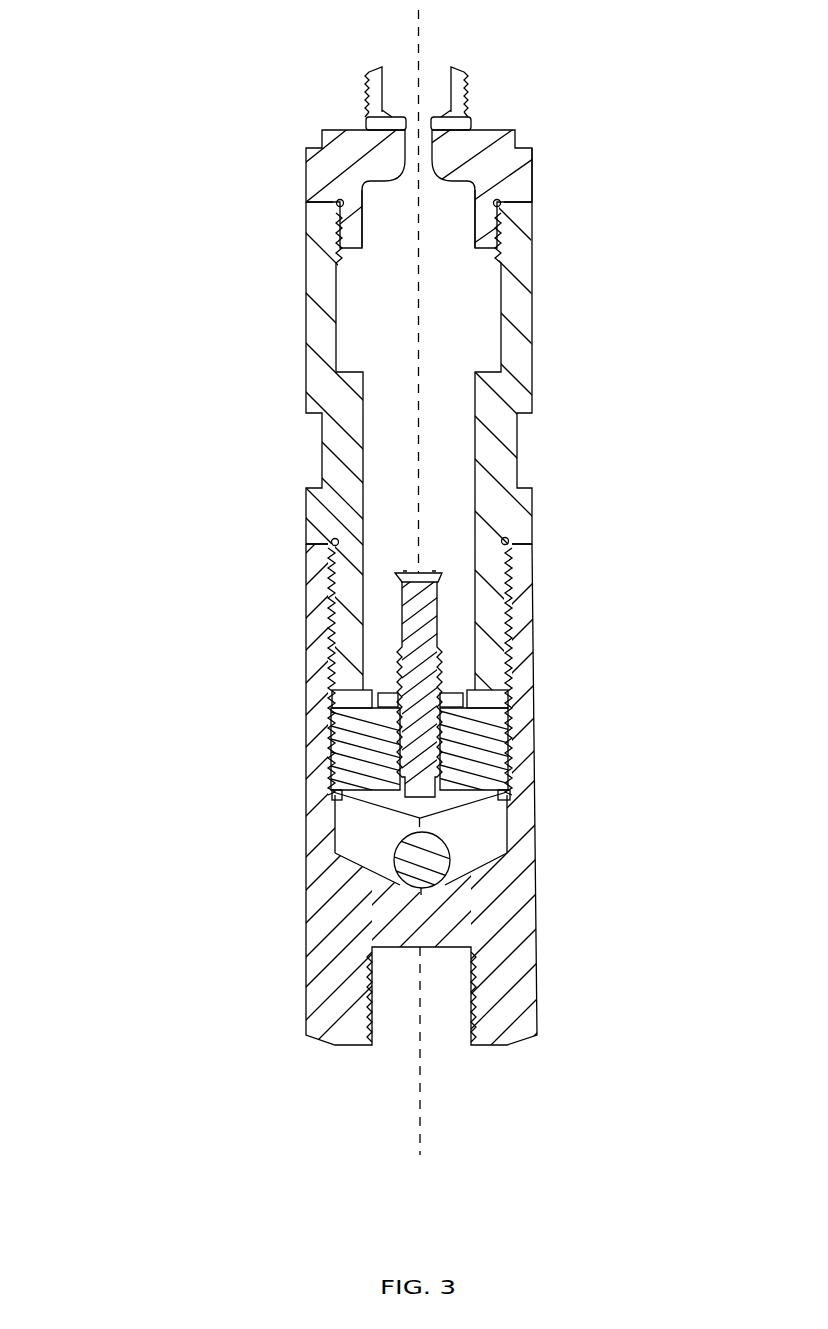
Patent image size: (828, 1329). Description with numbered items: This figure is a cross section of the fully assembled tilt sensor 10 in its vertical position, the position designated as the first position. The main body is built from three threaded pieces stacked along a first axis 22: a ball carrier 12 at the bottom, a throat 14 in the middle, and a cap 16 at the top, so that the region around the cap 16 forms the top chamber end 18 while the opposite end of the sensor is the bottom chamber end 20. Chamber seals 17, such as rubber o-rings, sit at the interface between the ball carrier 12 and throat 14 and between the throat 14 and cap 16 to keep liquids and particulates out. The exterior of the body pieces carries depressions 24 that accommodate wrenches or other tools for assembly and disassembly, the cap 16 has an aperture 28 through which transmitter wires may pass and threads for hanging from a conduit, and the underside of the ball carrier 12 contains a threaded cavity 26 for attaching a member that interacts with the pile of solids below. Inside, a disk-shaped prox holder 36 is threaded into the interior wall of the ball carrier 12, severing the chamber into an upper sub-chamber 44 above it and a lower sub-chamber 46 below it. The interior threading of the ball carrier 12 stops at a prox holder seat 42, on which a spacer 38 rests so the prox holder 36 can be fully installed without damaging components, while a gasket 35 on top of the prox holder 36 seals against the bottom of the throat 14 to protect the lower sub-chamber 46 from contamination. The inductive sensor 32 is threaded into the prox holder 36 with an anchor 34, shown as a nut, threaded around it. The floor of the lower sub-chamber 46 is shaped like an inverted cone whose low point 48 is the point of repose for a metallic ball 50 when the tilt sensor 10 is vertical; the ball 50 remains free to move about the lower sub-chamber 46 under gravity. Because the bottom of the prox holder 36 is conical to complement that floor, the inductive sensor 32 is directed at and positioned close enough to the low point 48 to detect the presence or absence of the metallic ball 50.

The tilt sensor 10 is at (97, 173).
The ball carrier 12 is at (522, 827).
The throat 14 is at (508, 400).
The cap 16 is at (505, 192).
The chamber seals 17 is at (336, 207).
The top chamber end 18 is at (535, 112).
The bottom chamber end 20 is at (565, 1028).
The first axis 22 is at (422, 12).
The depressions 24 is at (323, 147).
The threaded cavity 26 is at (400, 1042).
The aperture 28 is at (430, 83).
The inductive sensor 32 is at (443, 653).
The anchor 34 is at (467, 689).
The gasket 35 is at (332, 700).
The prox holder 36 is at (497, 737).
The spacer 38 is at (512, 792).
The prox holder seat 42 is at (338, 795).
The upper sub-chamber 44 is at (370, 276).
The lower sub-chamber 46 is at (363, 836).
The low point 48 is at (420, 893).
The metallic ball 50 is at (432, 870).